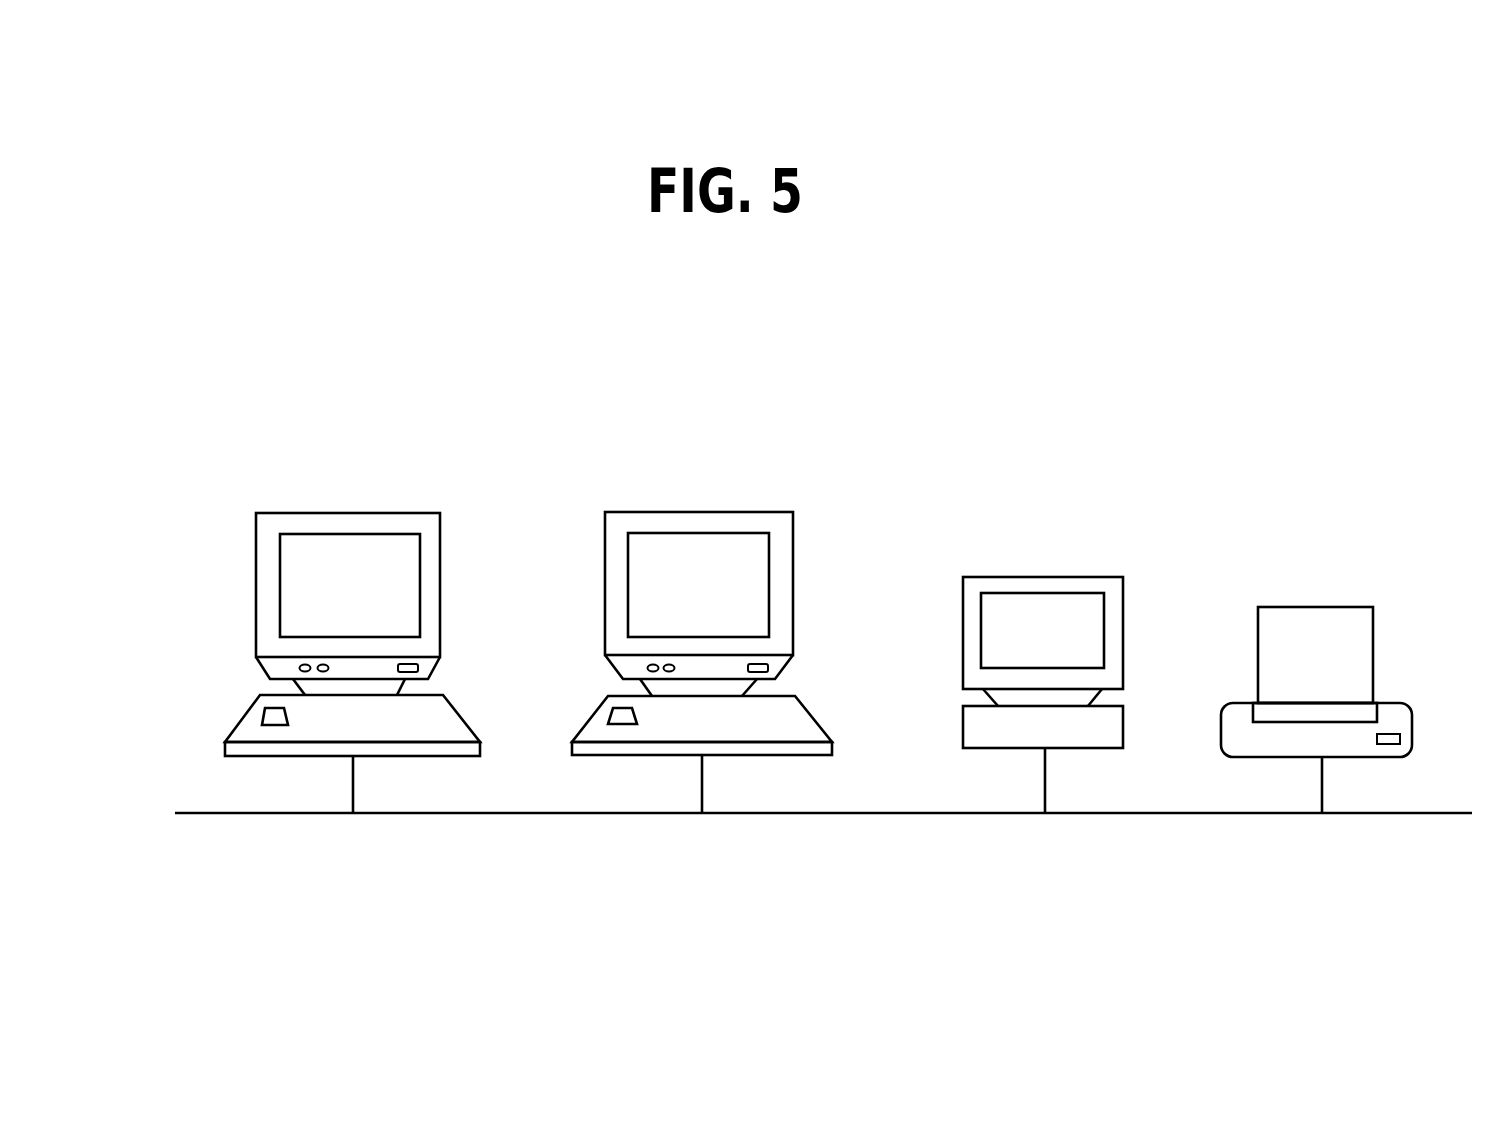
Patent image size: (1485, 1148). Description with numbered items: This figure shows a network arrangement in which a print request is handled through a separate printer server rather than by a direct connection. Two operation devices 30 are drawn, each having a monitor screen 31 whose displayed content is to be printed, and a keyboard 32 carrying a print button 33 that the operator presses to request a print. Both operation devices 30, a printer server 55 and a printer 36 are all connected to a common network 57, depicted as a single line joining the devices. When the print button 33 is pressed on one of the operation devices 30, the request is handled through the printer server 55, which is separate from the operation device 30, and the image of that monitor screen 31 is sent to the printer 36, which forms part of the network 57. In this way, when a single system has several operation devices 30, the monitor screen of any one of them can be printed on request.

The operation device 30 is at (521, 633).
The monitor screen 31 is at (292, 560).
The keyboard 32 is at (443, 712).
The print button 33 is at (268, 722).
The printer server 55 is at (988, 577).
The printer 36 is at (1288, 607).
The network 57 is at (647, 813).